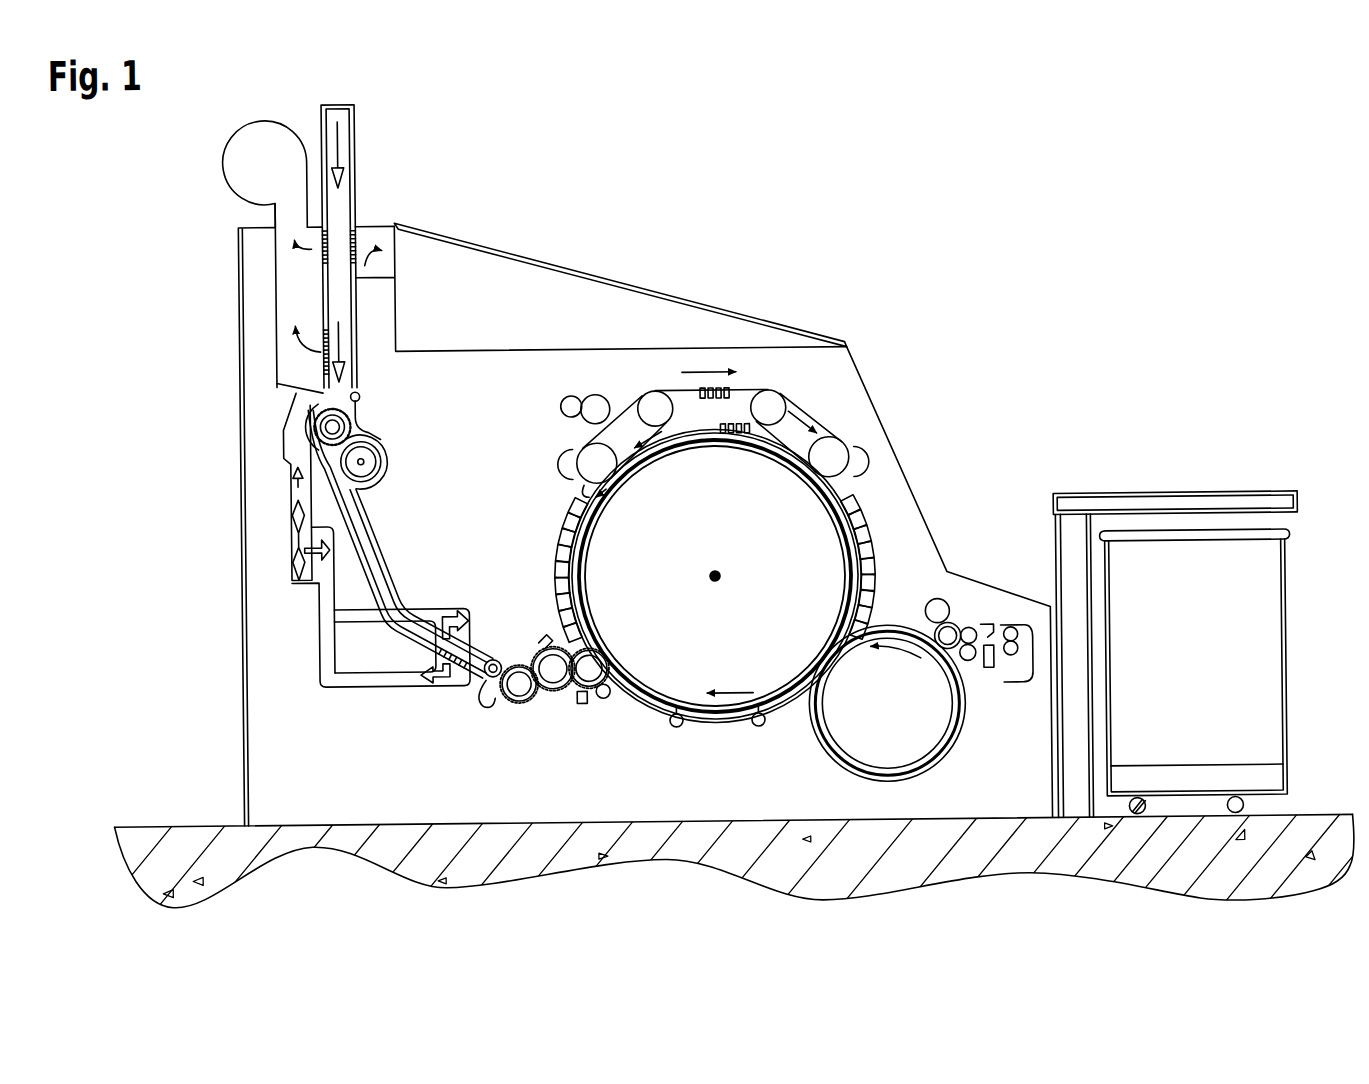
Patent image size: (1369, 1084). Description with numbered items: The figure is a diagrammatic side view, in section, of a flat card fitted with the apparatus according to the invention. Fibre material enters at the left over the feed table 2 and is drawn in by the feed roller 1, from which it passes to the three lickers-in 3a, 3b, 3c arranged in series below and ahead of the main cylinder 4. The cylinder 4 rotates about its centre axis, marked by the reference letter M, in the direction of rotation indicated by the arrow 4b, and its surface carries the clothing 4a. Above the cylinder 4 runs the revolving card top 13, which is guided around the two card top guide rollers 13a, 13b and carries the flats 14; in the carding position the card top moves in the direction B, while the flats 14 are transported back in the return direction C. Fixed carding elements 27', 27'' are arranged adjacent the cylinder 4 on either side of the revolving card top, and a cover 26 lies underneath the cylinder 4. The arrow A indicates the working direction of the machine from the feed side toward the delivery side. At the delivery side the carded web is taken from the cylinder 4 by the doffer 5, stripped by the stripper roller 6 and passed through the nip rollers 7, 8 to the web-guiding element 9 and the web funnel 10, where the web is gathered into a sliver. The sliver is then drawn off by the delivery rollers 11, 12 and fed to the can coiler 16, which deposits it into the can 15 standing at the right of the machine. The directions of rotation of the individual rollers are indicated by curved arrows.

The feed roller 1 is at (486, 674).
The feed table 2 is at (495, 660).
The licker-in 3a is at (514, 692).
The licker-in 3b is at (548, 663).
The licker-in 3c is at (584, 674).
The cylinder 4 is at (677, 663).
The clothing 4a is at (700, 714).
The direction of rotation of the cylinder 4b is at (740, 717).
The doffer 5 is at (878, 742).
The stripper roller 6 is at (946, 600).
The nip roller 7 is at (978, 635).
The nip roller 8 is at (962, 648).
The web-guiding element 9 is at (972, 664).
The web funnel 10 is at (991, 625).
The delivery roller 11 is at (1013, 628).
The delivery roller 12 is at (1018, 690).
The revolving card top 13 is at (739, 410).
The card top guide roller 13a is at (587, 443).
The card top guide roller 13b is at (829, 437).
The flats 14 is at (723, 430).
The can 15 is at (1195, 744).
The can coiler 16 is at (1226, 497).
The cover 26 is at (773, 708).
The fixed carding element 27' is at (512, 401).
The fixed carding element 27'' is at (902, 457).
The working direction A is at (707, 372).
The direction of rotation of the revolving card top B is at (655, 430).
The return transport direction of the flats C is at (830, 432).
The centre (axis) of the cylinder M is at (713, 582).